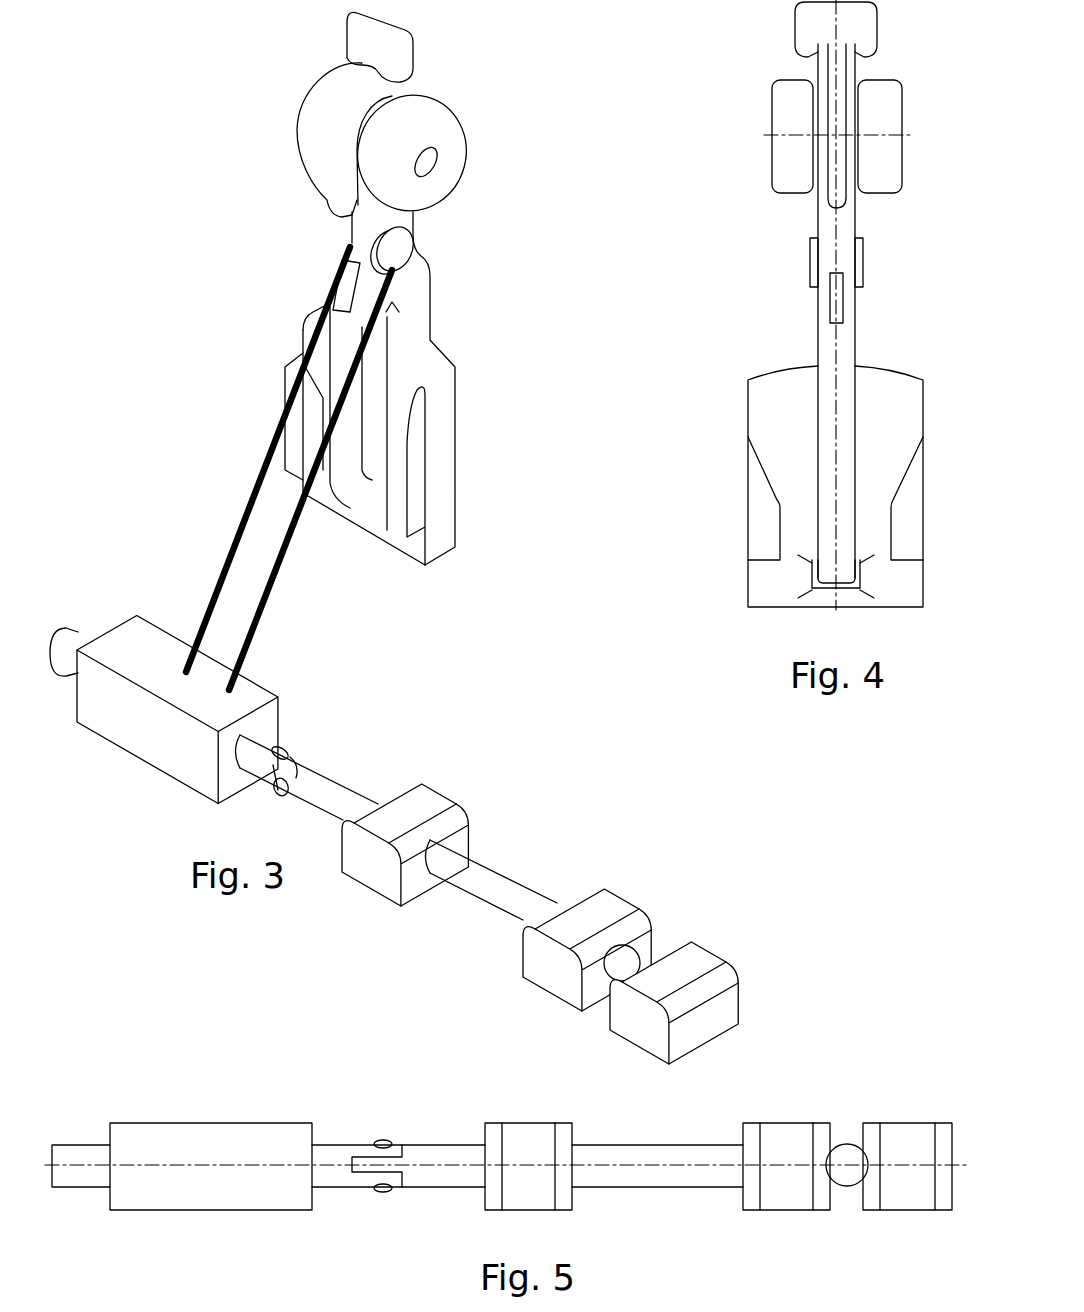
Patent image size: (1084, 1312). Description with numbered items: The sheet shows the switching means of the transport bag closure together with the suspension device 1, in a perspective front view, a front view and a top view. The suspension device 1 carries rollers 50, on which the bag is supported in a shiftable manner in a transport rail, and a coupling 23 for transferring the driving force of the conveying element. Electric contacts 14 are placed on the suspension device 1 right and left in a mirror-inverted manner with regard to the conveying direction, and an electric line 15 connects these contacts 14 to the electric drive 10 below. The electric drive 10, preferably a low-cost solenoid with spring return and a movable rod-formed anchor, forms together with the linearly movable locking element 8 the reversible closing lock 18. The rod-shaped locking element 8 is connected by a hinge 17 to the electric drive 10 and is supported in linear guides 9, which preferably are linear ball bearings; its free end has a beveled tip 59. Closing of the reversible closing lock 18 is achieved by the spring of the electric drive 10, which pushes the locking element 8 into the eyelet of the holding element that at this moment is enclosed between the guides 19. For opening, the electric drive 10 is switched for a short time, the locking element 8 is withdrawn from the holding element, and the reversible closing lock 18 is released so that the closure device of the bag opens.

In FIG. 3, the suspension device 1 is at (455, 272).
In FIG. 4, the suspension device 1 is at (757, 357).
In FIG. 3, the locking element 8 is at (495, 878).
In FIG. 5, the locking element 8 is at (452, 1120).
In FIG. 3, the linear guides 9 is at (418, 793).
In FIG. 5, the linear guides 9 is at (527, 1120).
In FIG. 3, the electric drive 10 is at (250, 690).
In FIG. 5, the electric drive 10 is at (230, 1118).
In FIG. 3, the electric contacts 14 is at (392, 260).
In FIG. 4, the electric contacts 14 is at (812, 277).
In FIG. 3, the electric line 15 is at (268, 551).
In FIG. 5, the hinge 17 is at (383, 1196).
In FIG. 3, the reversible closing lock 18 is at (372, 770).
In FIG. 5, the reversible closing lock 18 is at (342, 1118).
In FIG. 3, the guides 19 is at (630, 876).
In FIG. 4, the coupling 23 is at (815, 15).
In FIG. 4, the rollers 50 is at (790, 157).
In FIG. 3, the beveled tip 59 is at (619, 955).
In FIG. 5, the beveled tip 59 is at (847, 1160).